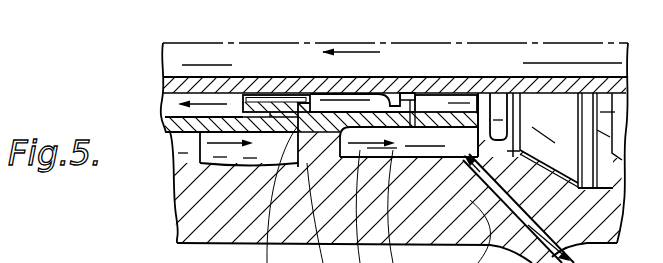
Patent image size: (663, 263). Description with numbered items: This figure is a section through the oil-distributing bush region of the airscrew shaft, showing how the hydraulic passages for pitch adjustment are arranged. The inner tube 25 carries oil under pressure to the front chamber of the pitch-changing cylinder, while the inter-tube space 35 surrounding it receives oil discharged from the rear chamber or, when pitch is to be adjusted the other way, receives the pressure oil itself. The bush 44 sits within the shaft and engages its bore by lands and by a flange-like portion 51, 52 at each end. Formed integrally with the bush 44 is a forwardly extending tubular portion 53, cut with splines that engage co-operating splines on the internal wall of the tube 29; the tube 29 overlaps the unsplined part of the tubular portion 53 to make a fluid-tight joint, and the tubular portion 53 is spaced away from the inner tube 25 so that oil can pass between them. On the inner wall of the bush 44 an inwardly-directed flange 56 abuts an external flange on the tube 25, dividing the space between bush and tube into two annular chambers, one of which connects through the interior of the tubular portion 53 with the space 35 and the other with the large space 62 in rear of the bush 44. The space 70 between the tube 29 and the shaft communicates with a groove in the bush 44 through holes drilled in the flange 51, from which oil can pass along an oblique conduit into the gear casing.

The tube 25 is at (173, 90).
The inter-tube space 35 is at (173, 110).
The tube 29 is at (182, 127).
The space 70 is at (185, 147).
The tubular portion 53 is at (279, 125).
The flange-like portion 51 is at (393, 100).
The inwardly-directed flange 56 is at (427, 116).
The bush 44 is at (448, 118).
The flange-like portion 52 is at (505, 128).
The large space 62 is at (563, 113).